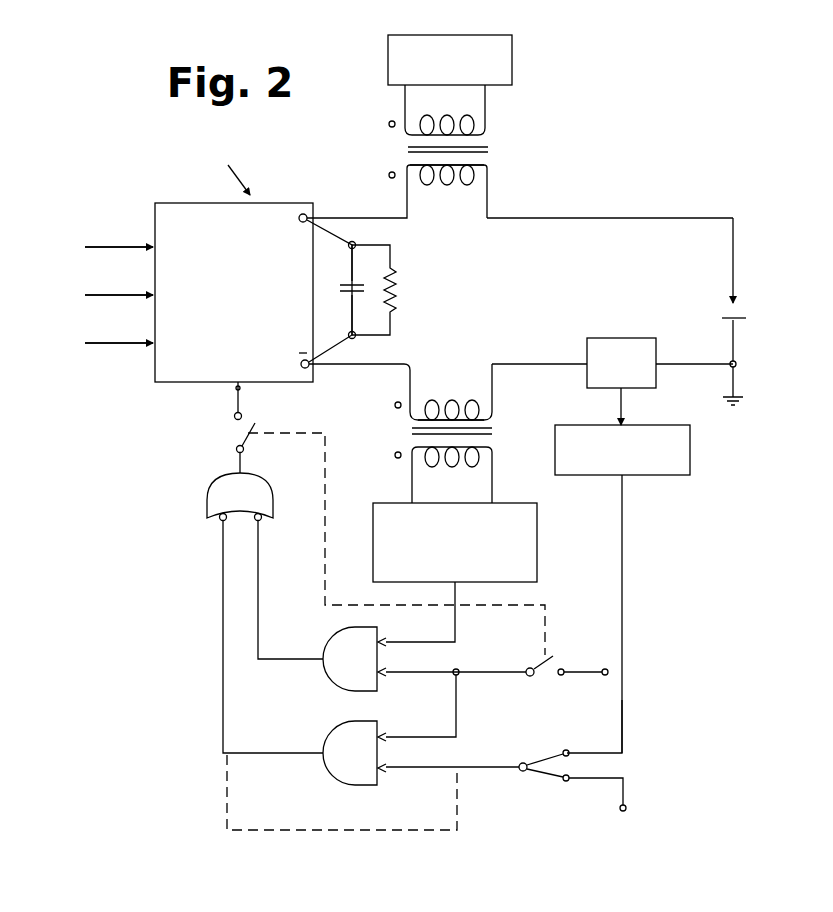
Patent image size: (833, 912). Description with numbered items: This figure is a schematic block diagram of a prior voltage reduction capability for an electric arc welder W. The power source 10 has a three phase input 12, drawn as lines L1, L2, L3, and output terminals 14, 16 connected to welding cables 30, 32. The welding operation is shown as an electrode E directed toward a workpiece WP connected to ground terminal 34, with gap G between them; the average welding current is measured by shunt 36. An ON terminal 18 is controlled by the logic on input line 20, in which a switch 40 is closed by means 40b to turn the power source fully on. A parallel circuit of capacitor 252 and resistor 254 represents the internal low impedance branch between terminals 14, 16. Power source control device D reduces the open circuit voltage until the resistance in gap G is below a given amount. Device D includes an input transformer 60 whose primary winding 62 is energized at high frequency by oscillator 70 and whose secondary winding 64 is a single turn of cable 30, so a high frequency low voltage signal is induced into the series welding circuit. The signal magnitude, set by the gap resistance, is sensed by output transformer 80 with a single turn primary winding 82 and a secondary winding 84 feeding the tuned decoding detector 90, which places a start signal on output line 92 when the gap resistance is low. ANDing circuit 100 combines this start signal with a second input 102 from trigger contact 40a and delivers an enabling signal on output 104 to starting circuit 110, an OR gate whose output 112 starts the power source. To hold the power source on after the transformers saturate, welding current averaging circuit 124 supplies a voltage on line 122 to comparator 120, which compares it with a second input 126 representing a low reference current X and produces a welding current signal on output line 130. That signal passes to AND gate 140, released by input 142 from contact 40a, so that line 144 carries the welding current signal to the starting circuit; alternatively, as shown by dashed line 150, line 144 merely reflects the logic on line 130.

The power source 10 is at (182, 203).
The three phase input 12 is at (108, 240).
The output terminal 14 is at (305, 212).
The output terminal 16 is at (310, 368).
The ON terminal 18 is at (230, 386).
The input line 20 is at (233, 400).
The welding cable 30 is at (653, 215).
The welding cable 32 is at (548, 362).
The ground terminal 34 is at (753, 402).
The shunt 36 is at (630, 338).
The switch 40 is at (232, 440).
The contact 40a is at (558, 661).
The means 40b is at (327, 455).
The input transformer 60 is at (507, 142).
The primary winding 62 is at (493, 105).
The secondary winding 64 is at (493, 175).
The oscillator 70 is at (512, 55).
The output transformer 80 is at (497, 427).
The primary winding 82 is at (497, 403).
The secondary winding 84 is at (497, 460).
The tuned decoding detector 90 is at (538, 548).
The output start signal line 92 is at (405, 642).
The ANDing circuit 100 is at (333, 682).
The second input 102 is at (403, 675).
The output 104 is at (258, 592).
The starting circuit 110 is at (207, 510).
The output 112 is at (235, 465).
The comparator 120 is at (547, 781).
The line 122 is at (625, 727).
The welding current averaging circuit 124 is at (676, 478).
The second input 126 is at (593, 781).
The output line 130 is at (413, 769).
The AND gate 140 is at (345, 783).
The input 142 is at (405, 738).
The line 144 is at (225, 697).
The dashed line 150 is at (227, 790).
The capacitor 252 is at (365, 297).
The resistor 254 is at (395, 283).
The welder W is at (230, 169).
The electrode E is at (743, 308).
The workpiece WP is at (745, 319).
The gap G is at (722, 318).
The power source control device D is at (640, 560).
The power line L1 is at (105, 255).
The power line L2 is at (106, 300).
The power line L3 is at (106, 350).
The low reference current X is at (628, 835).